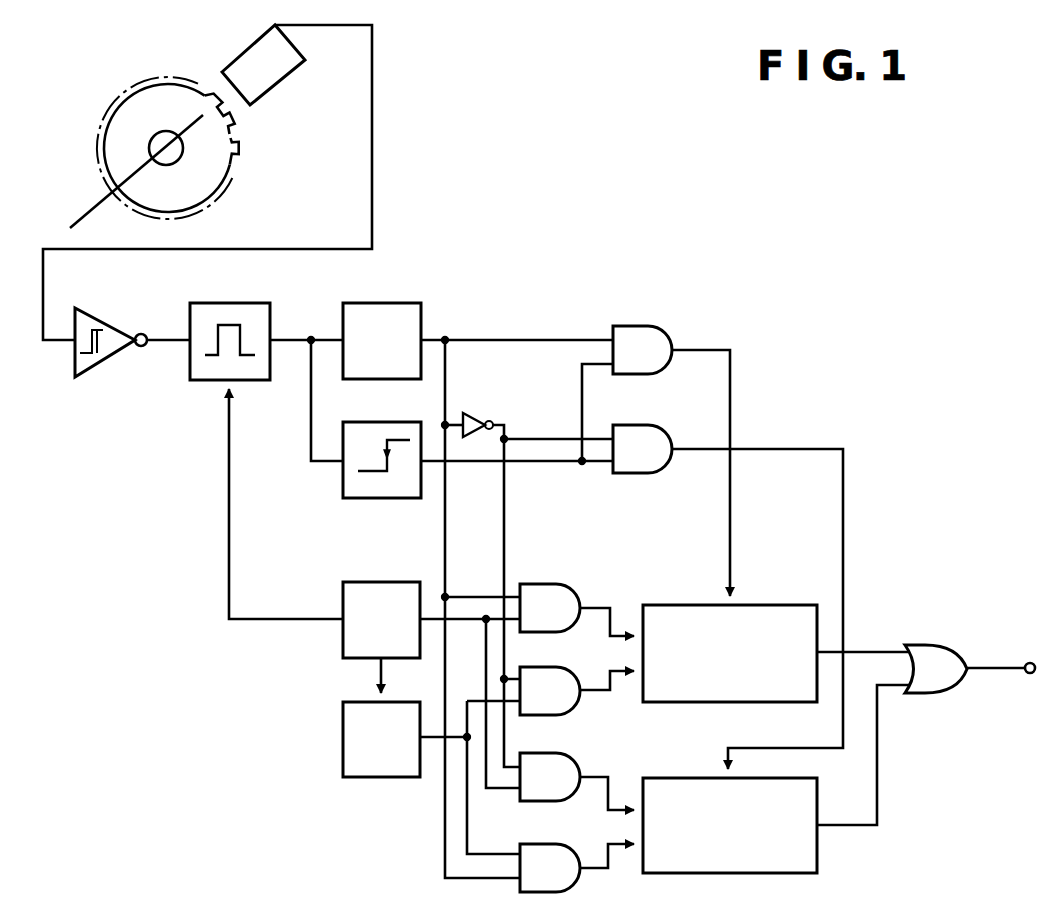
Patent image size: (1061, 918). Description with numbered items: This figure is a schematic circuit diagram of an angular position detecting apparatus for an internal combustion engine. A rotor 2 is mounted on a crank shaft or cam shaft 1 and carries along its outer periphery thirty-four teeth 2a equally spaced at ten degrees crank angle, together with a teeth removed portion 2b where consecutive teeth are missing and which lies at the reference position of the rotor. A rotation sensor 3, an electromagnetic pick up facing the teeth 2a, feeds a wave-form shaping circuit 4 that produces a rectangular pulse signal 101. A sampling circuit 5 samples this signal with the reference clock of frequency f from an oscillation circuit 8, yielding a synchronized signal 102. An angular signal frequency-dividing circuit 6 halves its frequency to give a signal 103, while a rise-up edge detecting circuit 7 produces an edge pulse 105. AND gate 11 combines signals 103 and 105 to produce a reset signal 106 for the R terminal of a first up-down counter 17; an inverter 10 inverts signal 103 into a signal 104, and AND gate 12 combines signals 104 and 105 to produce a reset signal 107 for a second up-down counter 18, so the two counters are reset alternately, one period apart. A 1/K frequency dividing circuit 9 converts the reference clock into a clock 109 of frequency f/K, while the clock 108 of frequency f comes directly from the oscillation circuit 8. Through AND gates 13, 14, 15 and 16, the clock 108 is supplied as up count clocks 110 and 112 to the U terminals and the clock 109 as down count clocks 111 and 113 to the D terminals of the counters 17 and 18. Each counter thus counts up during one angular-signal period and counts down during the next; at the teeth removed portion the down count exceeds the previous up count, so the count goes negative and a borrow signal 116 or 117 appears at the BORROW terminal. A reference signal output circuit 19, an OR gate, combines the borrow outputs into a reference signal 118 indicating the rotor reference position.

The crank shaft or cam shaft 1 is at (88, 213).
The rotor 2 is at (200, 173).
The teeth 2a is at (233, 152).
The teeth removed portion 2b is at (230, 133).
The rotation sensor 3 is at (288, 75).
The wave-form shaping circuit 4 is at (96, 364).
The sampling circuit 5 is at (197, 380).
The angular signal frequency-dividing circuit 6 is at (405, 303).
The rise-up edge detecting circuit 7 is at (343, 489).
The oscillation circuit 8 is at (355, 582).
The 1/K frequency dividing circuit 9 is at (343, 730).
The inverter 10 is at (478, 413).
The AND gate 11 is at (648, 326).
The AND gate 12 is at (650, 425).
The AND gate 13 is at (555, 584).
The AND gate 14 is at (556, 667).
The AND gate 15 is at (548, 753).
The AND gate 16 is at (525, 844).
The first up-down counter 17 is at (787, 605).
The second up-down counter 18 is at (818, 795).
The reference signal output circuit 19 is at (938, 693).
The rectangular pulse signal 101 is at (162, 340).
The sampled angular signal 102 is at (304, 340).
The frequency-divided signal 103 is at (527, 340).
The inverted signal 104 is at (545, 439).
The rise-up edge signal 105 is at (556, 462).
The first reset signal 106 is at (730, 350).
The second reset signal 107 is at (803, 449).
The up count clock 108 is at (465, 618).
The down count clock 109 is at (462, 745).
The up count clock to first counter 110 is at (608, 608).
The down count clock to first counter 111 is at (610, 690).
The up count clock to second counter 112 is at (590, 777).
The down count clock to second counter 113 is at (600, 862).
The borrow signal 116 is at (882, 652).
The borrow signal 117 is at (857, 826).
The reference signal 118 is at (998, 667).